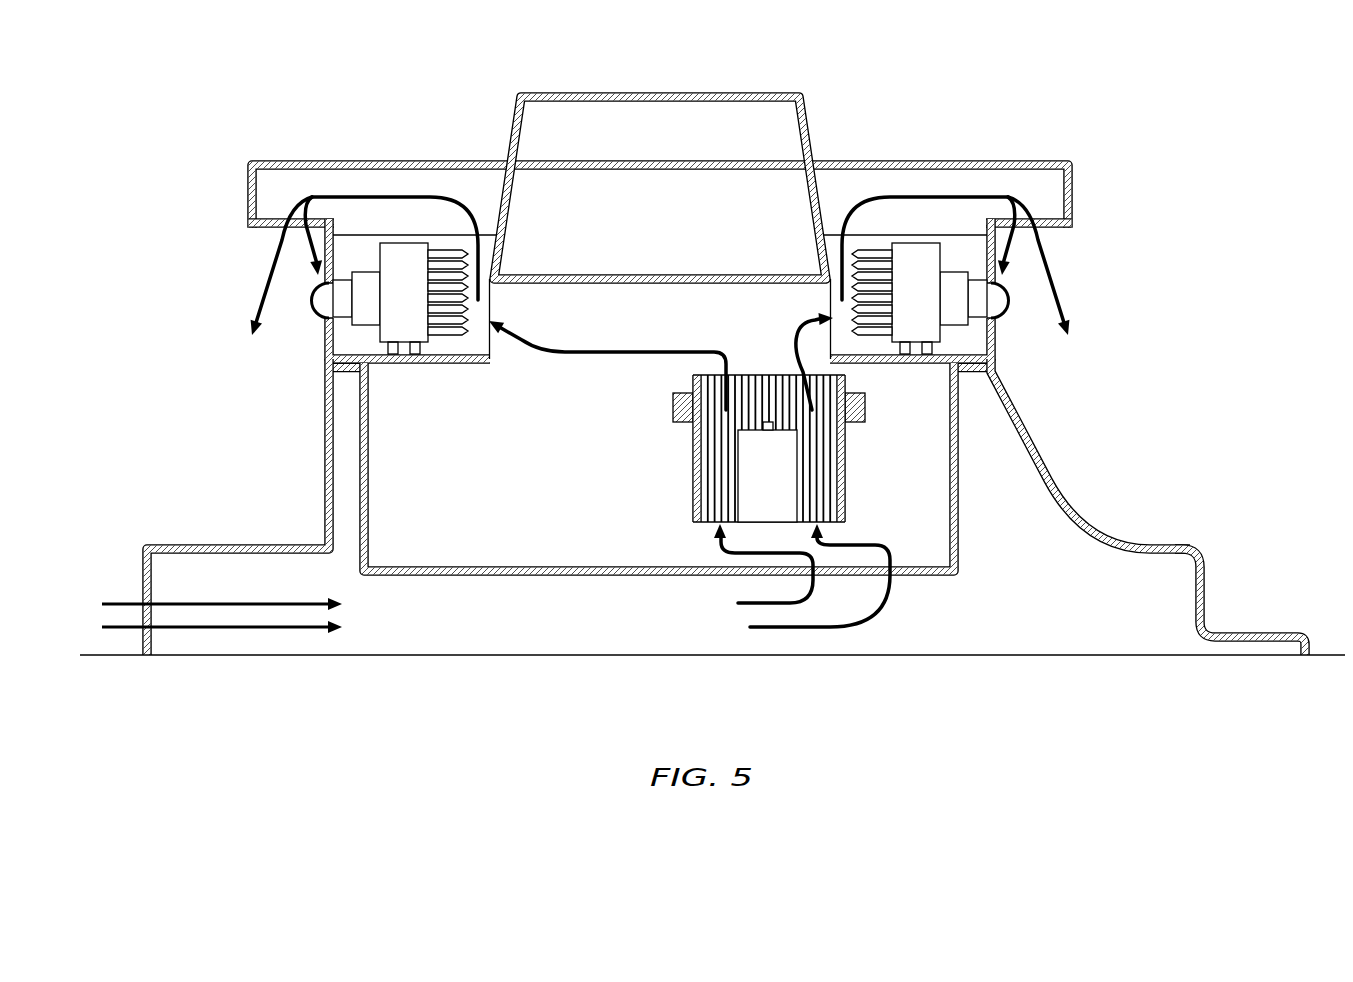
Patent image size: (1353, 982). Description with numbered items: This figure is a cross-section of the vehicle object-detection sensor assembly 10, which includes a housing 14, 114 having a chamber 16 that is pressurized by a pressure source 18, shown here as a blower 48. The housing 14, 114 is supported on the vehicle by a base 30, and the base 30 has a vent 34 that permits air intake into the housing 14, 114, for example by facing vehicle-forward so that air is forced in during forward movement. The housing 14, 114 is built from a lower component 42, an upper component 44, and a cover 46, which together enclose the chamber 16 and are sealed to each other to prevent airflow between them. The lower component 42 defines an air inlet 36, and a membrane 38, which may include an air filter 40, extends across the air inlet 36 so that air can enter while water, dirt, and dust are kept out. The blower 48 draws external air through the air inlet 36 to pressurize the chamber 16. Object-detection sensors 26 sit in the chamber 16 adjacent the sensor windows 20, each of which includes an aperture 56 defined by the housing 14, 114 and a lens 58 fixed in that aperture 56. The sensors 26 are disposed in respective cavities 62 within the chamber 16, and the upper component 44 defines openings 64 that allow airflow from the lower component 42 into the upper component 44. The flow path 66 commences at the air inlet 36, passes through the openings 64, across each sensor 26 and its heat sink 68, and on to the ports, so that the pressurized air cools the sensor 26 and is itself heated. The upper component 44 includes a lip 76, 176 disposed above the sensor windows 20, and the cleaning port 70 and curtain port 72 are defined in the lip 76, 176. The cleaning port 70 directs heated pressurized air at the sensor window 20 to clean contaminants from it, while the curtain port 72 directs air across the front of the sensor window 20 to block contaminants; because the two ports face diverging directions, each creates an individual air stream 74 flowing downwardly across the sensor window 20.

The assembly 10 is at (688, 396).
The housing 14 is at (726, 530).
The housing 114 is at (726, 530).
The chamber 16 is at (507, 508).
The pressure source 18 is at (795, 448).
The blower 48 is at (847, 457).
The sensor window 20 is at (302, 312).
The object-detection sensor 26 is at (364, 342).
The base 30 is at (1190, 550).
The vent 34 is at (93, 636).
The air inlet 36 is at (914, 604).
The membrane 38 is at (688, 494).
The air filter 40 is at (930, 577).
The lower component 42 is at (358, 512).
The upper component 44 is at (325, 357).
The cover 46 is at (983, 158).
The aperture 56 is at (659, 344).
The lens 58 is at (325, 310).
The cavity 62 is at (358, 250).
The opening 64 is at (842, 347).
The flow path 66 is at (425, 196).
The heat sink 68 is at (447, 337).
The cleaning port 70 is at (305, 205).
The curtain port 72 is at (290, 223).
The air stream 74 is at (257, 307).
The lip 76 is at (690, 193).
The lip 176 is at (662, 193).